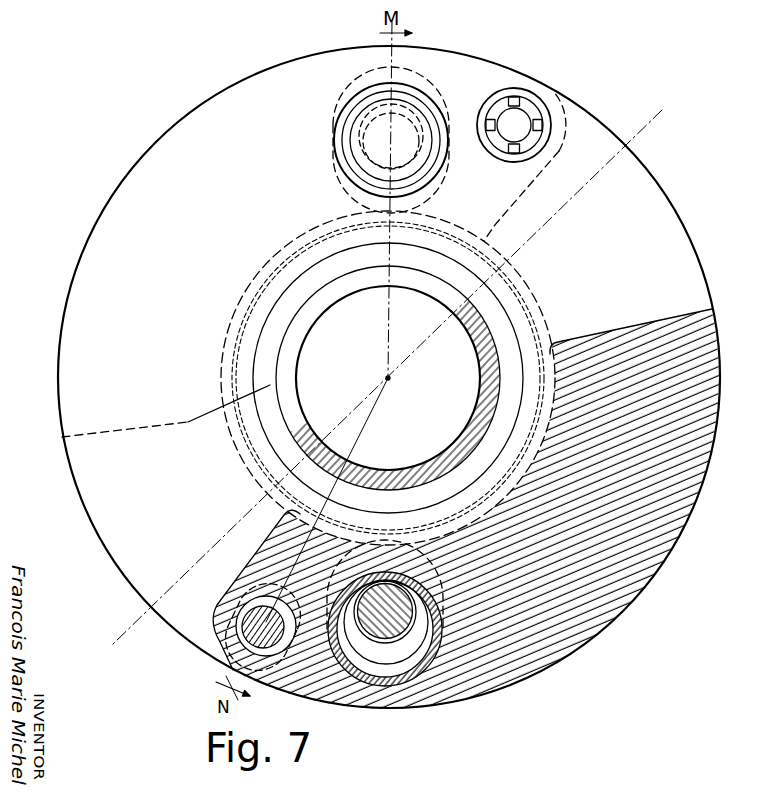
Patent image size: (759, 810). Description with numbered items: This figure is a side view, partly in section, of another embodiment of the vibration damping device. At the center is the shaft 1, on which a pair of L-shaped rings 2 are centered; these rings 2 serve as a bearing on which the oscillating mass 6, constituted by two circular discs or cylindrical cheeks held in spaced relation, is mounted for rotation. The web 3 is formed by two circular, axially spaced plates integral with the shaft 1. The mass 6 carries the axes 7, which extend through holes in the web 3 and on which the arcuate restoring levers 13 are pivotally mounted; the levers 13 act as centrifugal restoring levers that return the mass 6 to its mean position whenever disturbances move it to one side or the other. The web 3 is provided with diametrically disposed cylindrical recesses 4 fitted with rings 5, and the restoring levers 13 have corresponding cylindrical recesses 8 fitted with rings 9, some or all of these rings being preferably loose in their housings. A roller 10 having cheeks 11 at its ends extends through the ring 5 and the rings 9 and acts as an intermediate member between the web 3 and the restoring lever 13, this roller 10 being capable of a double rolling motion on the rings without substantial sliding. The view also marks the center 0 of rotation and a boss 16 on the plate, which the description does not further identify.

The centre of rotation 0 is at (388, 378).
The shaft 1 is at (292, 403).
The rings 2 is at (221, 412).
The web 3 is at (643, 242).
The cylindrical recesses 4 is at (409, 536).
The rings 5 is at (411, 643).
The oscillating mass 6 is at (113, 554).
The axes 7 is at (518, 123).
The cylindrical recesses 8 is at (384, 661).
The rings 9 is at (368, 663).
The roller 10 is at (365, 122).
The cheeks 11 is at (370, 181).
The restoring levers 13 is at (607, 537).
The boss 16 is at (450, 145).